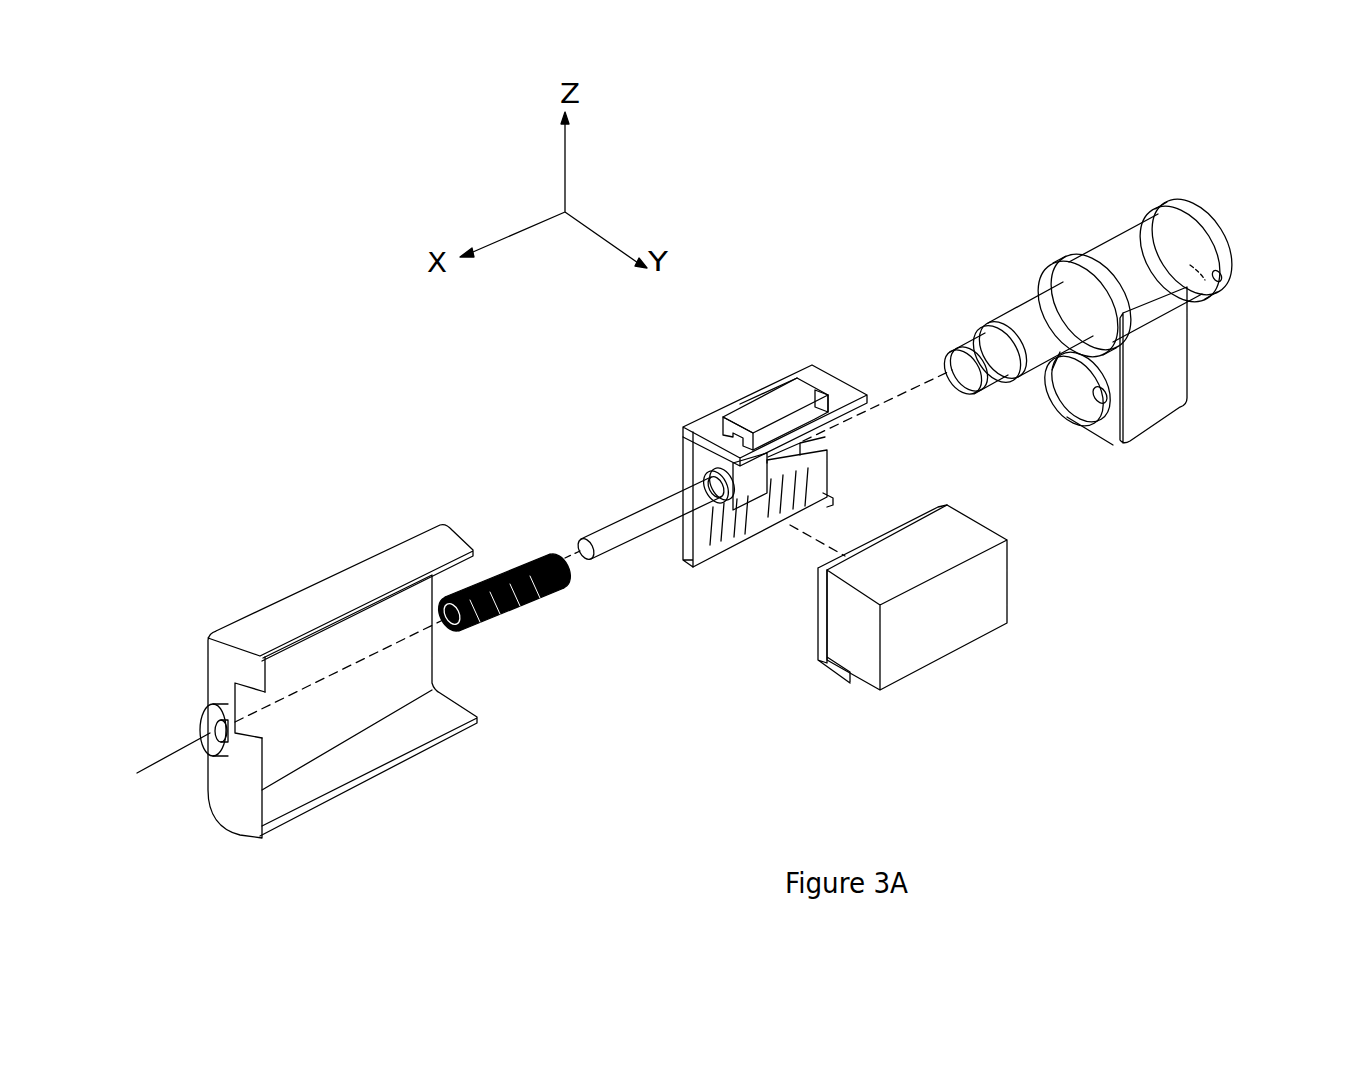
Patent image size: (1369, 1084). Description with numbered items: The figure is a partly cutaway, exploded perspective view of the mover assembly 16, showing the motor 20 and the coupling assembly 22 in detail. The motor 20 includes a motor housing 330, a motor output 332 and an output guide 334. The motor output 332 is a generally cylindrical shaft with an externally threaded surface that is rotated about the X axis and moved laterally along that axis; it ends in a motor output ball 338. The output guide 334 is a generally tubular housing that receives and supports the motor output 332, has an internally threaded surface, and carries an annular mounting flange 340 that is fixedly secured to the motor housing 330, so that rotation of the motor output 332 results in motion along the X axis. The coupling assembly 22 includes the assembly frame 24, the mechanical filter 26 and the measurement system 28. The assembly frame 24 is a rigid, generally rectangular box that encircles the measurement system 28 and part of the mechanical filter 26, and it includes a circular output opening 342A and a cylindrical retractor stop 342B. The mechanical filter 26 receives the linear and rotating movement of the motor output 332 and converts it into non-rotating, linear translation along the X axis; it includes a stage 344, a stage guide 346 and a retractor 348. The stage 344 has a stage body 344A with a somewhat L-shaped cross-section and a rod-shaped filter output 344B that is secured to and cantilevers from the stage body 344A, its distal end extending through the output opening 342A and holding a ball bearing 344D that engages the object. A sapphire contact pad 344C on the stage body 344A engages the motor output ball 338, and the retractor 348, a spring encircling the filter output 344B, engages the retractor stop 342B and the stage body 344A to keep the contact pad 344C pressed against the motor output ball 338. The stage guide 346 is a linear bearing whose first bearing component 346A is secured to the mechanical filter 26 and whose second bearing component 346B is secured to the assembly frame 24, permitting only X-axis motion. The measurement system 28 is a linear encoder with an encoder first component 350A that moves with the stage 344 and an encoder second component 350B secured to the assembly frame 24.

The mover assembly 16 is at (1218, 326).
The motor 20 is at (1069, 294).
The coupling assembly 22 is at (618, 492).
The assembly frame 24 is at (279, 660).
The mechanical filter 26 is at (808, 372).
The measurement system 28 is at (964, 625).
The motor housing 330 is at (1173, 375).
The motor output 332 is at (983, 333).
The output guide 334 is at (1033, 310).
The motor output ball 338 is at (973, 367).
The mounting flange 340 is at (1077, 273).
The output opening 342A is at (213, 730).
The retractor stop 342B is at (227, 733).
The stage 344 is at (703, 423).
The stage body 344A is at (690, 460).
The filter output 344B is at (630, 533).
The contact pad 344C is at (742, 470).
The ball bearing 344D is at (587, 553).
The stage guide 346 is at (801, 337).
The first bearing component 346A is at (827, 398).
The second bearing component 346B is at (772, 405).
The retractor 348 is at (507, 617).
The encoder first component 350A is at (807, 483).
The encoder second component 350B is at (915, 643).